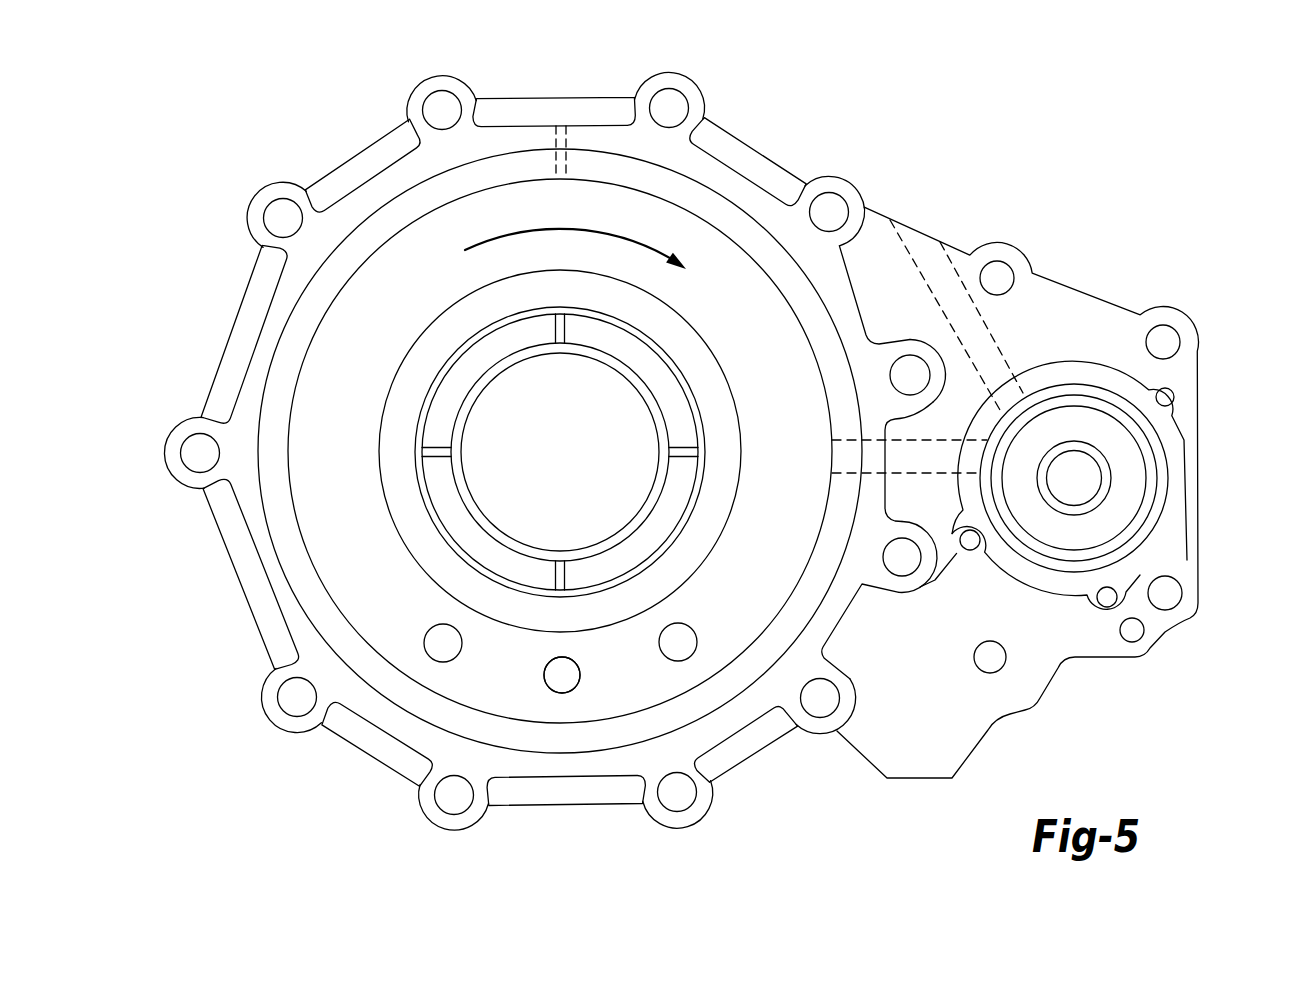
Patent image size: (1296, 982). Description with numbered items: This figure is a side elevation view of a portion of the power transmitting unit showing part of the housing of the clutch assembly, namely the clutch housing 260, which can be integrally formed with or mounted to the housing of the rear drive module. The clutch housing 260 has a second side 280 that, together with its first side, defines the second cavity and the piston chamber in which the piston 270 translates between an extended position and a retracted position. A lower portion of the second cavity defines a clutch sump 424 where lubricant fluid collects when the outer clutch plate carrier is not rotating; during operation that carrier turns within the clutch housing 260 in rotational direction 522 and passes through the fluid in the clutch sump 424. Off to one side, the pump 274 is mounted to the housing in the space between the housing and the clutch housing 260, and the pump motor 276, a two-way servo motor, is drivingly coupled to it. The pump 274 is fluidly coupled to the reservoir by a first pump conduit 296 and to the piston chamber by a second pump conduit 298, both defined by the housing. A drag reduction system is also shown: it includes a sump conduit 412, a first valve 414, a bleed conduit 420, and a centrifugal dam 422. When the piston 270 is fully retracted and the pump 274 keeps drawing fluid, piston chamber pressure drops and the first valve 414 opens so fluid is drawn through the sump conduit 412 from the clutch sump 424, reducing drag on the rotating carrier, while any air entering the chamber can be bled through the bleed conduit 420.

The clutch housing 260 is at (287, 298).
The piston 270 is at (320, 513).
The pump 274 is at (1150, 460).
The pump motor 276 is at (1127, 485).
The second side 280 is at (215, 374).
The first pump conduit 296 is at (1003, 350).
The second pump conduit 298 is at (915, 473).
The sump conduit 412 is at (568, 680).
The first valve 414 is at (540, 690).
The bleed conduit 420 is at (560, 158).
The centrifugal dam 422 is at (455, 512).
The clutch sump 424 is at (342, 641).
The rotational direction 522 is at (467, 249).